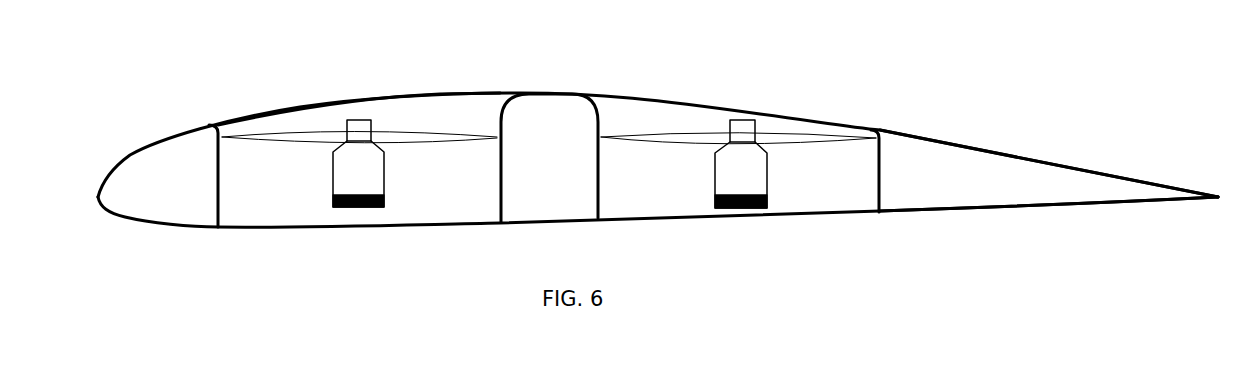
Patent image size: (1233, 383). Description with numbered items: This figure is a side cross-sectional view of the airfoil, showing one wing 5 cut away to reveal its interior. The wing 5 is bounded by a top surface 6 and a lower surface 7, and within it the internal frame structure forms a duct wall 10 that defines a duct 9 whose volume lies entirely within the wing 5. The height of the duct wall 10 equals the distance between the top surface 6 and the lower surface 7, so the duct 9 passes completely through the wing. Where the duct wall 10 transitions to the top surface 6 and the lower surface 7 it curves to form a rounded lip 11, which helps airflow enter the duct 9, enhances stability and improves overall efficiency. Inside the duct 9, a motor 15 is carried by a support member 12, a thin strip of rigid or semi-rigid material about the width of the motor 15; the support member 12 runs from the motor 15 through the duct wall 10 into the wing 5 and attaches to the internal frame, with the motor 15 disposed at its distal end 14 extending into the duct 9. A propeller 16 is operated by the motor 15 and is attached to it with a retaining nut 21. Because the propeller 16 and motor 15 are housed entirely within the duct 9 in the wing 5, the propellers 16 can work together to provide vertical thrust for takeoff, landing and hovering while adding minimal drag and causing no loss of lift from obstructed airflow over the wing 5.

The wing 5 is at (547, 120).
The top surface 6 is at (1078, 165).
The lower surface 7 is at (940, 210).
The duct 9 is at (445, 115).
The duct wall 10 is at (221, 182).
The rounded lip 11 is at (878, 128).
The support member 12 is at (748, 208).
The distal end 14 is at (739, 175).
The motor 15 is at (724, 174).
The propeller 16 is at (705, 136).
The retaining nut 21 is at (740, 125).